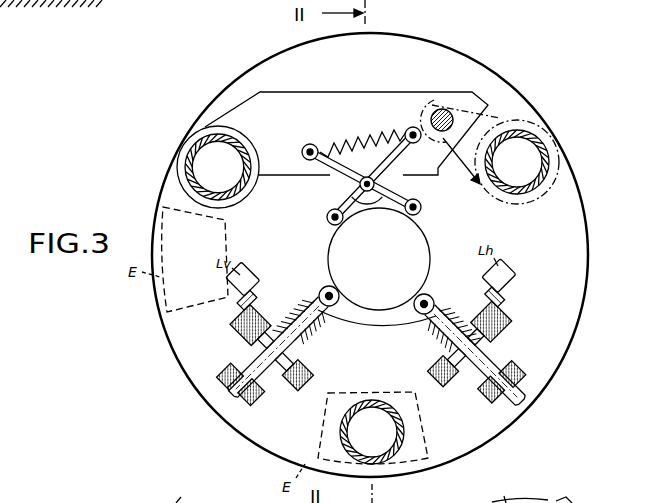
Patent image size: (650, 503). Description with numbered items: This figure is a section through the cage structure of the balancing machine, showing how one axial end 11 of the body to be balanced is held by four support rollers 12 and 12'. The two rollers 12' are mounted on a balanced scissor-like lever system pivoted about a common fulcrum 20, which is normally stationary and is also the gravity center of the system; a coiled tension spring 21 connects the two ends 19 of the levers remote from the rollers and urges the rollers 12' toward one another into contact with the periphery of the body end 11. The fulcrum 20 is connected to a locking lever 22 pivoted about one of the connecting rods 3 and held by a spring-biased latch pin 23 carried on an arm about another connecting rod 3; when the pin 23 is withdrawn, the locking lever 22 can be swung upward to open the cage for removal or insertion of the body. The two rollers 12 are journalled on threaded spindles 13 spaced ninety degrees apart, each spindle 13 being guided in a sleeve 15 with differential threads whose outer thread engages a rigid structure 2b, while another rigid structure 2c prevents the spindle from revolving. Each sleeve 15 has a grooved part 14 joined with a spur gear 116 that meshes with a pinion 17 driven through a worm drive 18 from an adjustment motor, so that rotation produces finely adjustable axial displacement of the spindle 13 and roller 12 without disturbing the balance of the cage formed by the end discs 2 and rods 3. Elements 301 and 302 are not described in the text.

The end disc 2 is at (552, 136).
The connecting rod 3 is at (218, 200).
The axial end of body 11 is at (430, 250).
The support roller 12 is at (382, 292).
The support roller 12' is at (378, 183).
The threaded spindle 13 is at (377, 322).
The grooved part 14 is at (273, 375).
The sleeve 15 is at (322, 350).
The pinion 17 is at (230, 310).
The worm drive 18 is at (288, 305).
The end of lever system 19 is at (342, 170).
The fulcrum 20 is at (367, 177).
The coiled tension spring 21 is at (366, 136).
The locking lever 22 is at (345, 92).
The latch pin 23 is at (430, 117).
The spur gear 116 is at (242, 330).
The rigid structure 2b is at (308, 368).
The rigid structure 2c is at (262, 400).
The rail 301 is at (388, 492).
The rail 302 is at (509, 493).